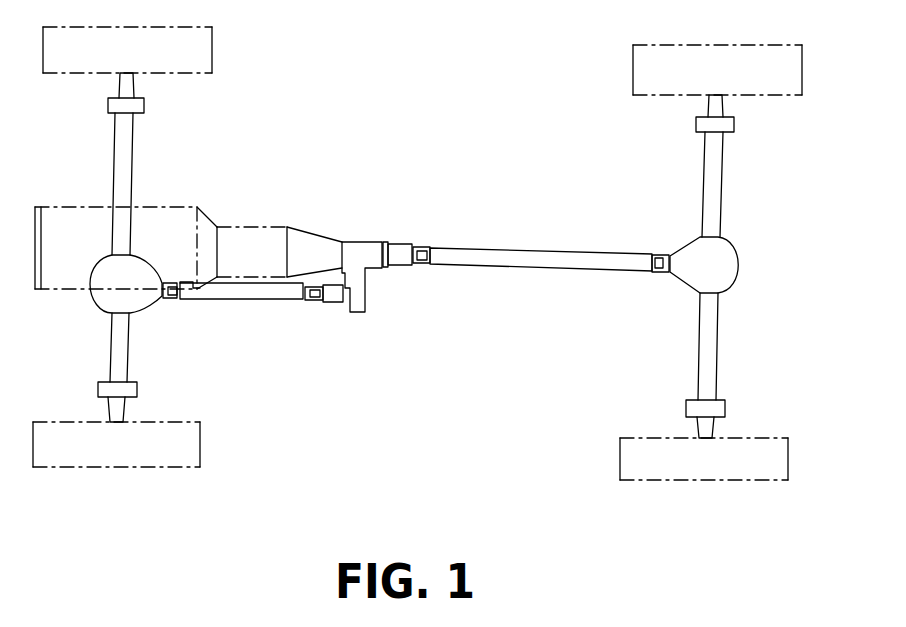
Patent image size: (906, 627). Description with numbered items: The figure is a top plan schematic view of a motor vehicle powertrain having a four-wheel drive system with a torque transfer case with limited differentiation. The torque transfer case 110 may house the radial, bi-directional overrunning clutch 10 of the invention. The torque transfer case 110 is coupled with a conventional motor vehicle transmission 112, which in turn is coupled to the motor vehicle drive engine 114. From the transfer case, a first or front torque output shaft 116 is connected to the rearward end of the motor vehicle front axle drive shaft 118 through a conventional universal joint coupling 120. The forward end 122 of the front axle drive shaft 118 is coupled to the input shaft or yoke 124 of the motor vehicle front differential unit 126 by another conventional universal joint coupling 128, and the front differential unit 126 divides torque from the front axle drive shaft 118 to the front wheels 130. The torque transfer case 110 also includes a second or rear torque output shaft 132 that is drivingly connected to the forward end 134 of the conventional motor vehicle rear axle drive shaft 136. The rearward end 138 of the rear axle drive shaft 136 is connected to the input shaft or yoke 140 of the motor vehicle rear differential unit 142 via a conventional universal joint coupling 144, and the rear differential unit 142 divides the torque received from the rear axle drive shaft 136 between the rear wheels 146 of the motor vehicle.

The radial, bi-directional overrunning clutch 10 is at (384, 236).
The torque transfer case 110 is at (368, 240).
The motor vehicle transmission 112 is at (257, 227).
The motor vehicle drive engine 114 is at (168, 205).
The first or front torque output shaft 116 is at (325, 301).
The motor vehicle front axle drive shaft 118 is at (298, 300).
The universal joint coupling 120 is at (315, 300).
The forward end 122 is at (168, 280).
The input shaft or yoke 124 is at (163, 293).
The motor vehicle front differential unit 126 is at (107, 303).
The universal joint coupling 128 is at (163, 298).
The front wheels 130 is at (212, 50).
The second or rear torque output shaft 132 is at (412, 247).
The forward end 134 is at (418, 263).
The motor vehicle rear axle drive shaft 136 is at (505, 248).
The rearward end 138 is at (668, 275).
The input shaft or yoke 140 is at (663, 277).
The motor vehicle rear differential unit 142 is at (723, 260).
The universal joint coupling 144 is at (665, 257).
The rear wheels 146 is at (633, 70).